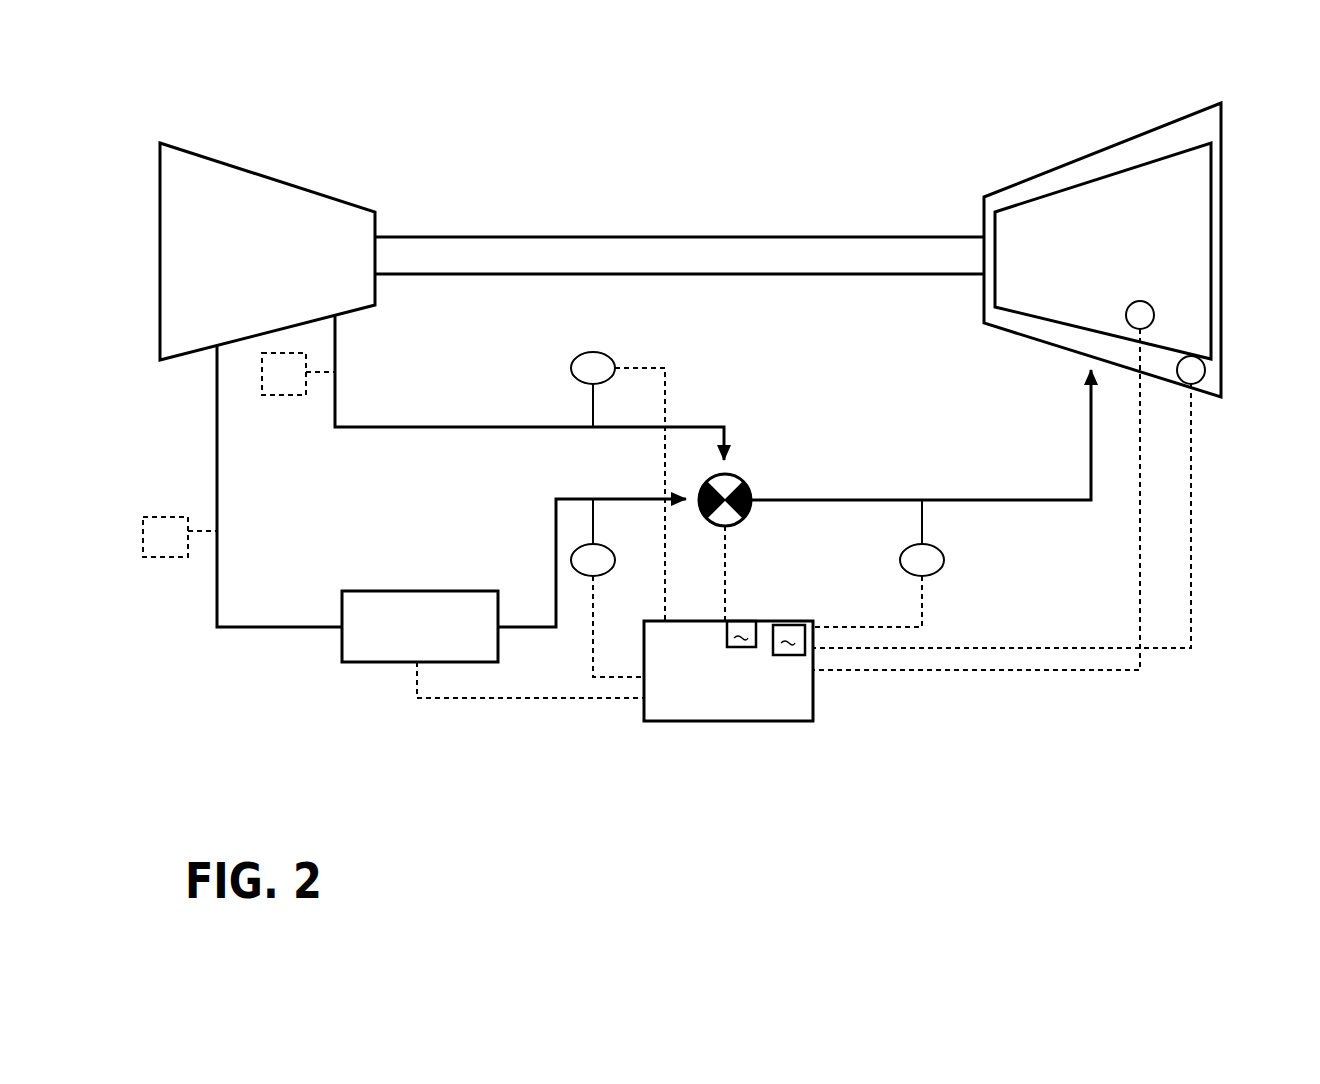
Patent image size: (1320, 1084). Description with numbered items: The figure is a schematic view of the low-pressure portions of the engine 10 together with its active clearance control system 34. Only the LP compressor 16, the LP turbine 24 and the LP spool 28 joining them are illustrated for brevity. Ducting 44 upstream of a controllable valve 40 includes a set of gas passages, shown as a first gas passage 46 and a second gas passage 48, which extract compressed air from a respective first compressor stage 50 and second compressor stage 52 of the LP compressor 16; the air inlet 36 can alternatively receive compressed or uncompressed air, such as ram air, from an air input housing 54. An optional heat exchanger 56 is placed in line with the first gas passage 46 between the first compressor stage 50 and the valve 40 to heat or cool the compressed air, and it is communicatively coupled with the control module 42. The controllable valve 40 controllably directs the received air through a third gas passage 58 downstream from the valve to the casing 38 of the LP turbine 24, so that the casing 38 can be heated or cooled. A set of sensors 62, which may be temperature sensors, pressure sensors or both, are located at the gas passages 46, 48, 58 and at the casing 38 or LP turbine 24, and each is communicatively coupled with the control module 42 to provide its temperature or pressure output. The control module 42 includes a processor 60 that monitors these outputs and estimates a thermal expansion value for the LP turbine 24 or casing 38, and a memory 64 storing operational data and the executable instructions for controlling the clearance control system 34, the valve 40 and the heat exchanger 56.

The engine 10 is at (568, 126).
The LP compressor 16 is at (256, 315).
The LP turbine 24 is at (1189, 271).
The LP spool 28 is at (683, 267).
The active clearance control system 34 is at (824, 689).
The air inlet 36 is at (346, 325).
The casing 38 is at (1157, 362).
The controllable valve 40 is at (745, 483).
The control module 42 is at (796, 711).
The ducting 44 is at (632, 403).
The first gas passage 46 is at (556, 545).
The second gas passage 48 is at (517, 427).
The first compressor stage 50 is at (239, 358).
The second compressor stage 52 is at (358, 321).
The air input housing 54 is at (291, 386).
The heat exchanger 56 is at (367, 665).
The third gas passage 58 is at (1018, 498).
The processor 60 is at (790, 640).
The sensors 62 is at (603, 353).
The memory 64 is at (745, 635).